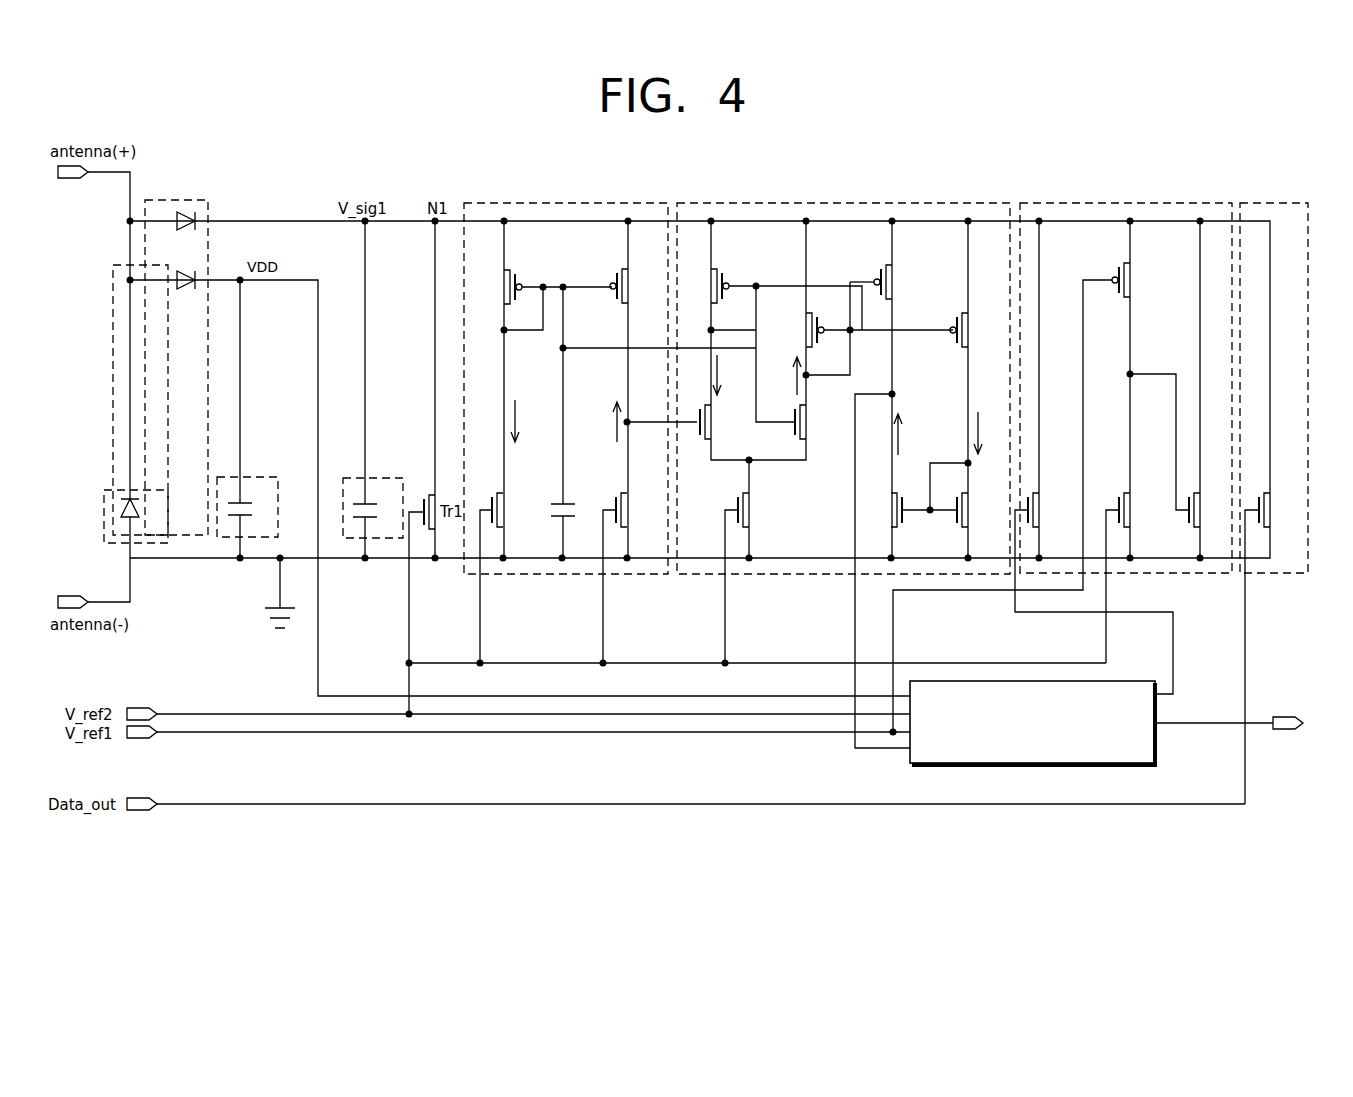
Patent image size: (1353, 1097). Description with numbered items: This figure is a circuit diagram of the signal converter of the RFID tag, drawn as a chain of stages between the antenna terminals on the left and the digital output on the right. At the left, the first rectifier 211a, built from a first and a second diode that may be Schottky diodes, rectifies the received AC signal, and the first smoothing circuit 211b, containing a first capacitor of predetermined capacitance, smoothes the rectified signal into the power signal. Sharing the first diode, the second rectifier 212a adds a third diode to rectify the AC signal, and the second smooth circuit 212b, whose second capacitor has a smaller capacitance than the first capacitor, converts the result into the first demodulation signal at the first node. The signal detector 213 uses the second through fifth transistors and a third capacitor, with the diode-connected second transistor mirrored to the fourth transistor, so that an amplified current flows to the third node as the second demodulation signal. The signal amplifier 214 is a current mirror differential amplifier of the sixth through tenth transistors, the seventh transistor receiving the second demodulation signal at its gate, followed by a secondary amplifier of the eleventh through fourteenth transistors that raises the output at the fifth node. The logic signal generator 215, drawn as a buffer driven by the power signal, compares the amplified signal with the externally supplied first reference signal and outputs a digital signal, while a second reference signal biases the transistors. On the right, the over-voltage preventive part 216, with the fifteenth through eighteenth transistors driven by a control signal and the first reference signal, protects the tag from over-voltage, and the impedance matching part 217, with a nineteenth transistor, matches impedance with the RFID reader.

The first rectifier 211a is at (113, 384).
The first smoothing circuit 211b is at (262, 472).
The second rectifier 212a is at (176, 198).
The second smooth circuit 212b is at (387, 474).
The signal detector 213 is at (567, 198).
The signal amplifier 214 is at (842, 198).
The logic signal generator 215 is at (1158, 744).
The over-voltage preventive part 216 is at (1127, 198).
The impedance matching part 217 is at (1269, 198).